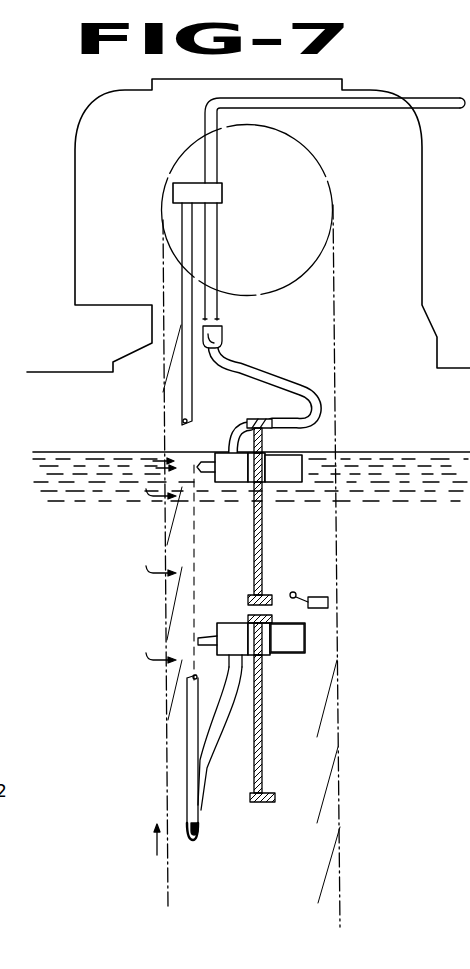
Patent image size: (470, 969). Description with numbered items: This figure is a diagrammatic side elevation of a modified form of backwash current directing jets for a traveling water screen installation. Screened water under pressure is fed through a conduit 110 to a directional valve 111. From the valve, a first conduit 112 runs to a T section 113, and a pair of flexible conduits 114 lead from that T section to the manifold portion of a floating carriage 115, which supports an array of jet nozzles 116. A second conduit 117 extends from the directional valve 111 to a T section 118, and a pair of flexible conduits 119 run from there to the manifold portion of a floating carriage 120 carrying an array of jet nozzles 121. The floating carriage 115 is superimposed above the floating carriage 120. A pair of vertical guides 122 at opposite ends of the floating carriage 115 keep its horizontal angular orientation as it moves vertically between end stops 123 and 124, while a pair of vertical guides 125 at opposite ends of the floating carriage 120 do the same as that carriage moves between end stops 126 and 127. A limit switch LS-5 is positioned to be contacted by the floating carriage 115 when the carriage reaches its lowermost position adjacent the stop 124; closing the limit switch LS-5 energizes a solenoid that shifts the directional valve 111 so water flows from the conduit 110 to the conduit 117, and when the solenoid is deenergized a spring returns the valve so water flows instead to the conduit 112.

The conduit 110 is at (438, 97).
The directional valve 111 is at (222, 192).
The first conduit 112 is at (217, 242).
The T section 113 is at (222, 332).
The flexible conduits 114 is at (270, 368).
The floating carriage 115 is at (258, 467).
The jet nozzles 116 is at (208, 462).
The second conduit 117 is at (182, 285).
The T section 118 is at (200, 823).
The flexible conduits 119 is at (215, 742).
The floating carriage 120 is at (246, 650).
The jet nozzles 121 is at (203, 637).
The vertical guides 122 is at (263, 532).
The end stop 123 is at (263, 418).
The end stop 124 is at (248, 596).
The vertical guides 125 is at (265, 673).
The end stop 126 is at (275, 618).
The end stop 127 is at (267, 802).
The limit switch LS-5 is at (330, 602).